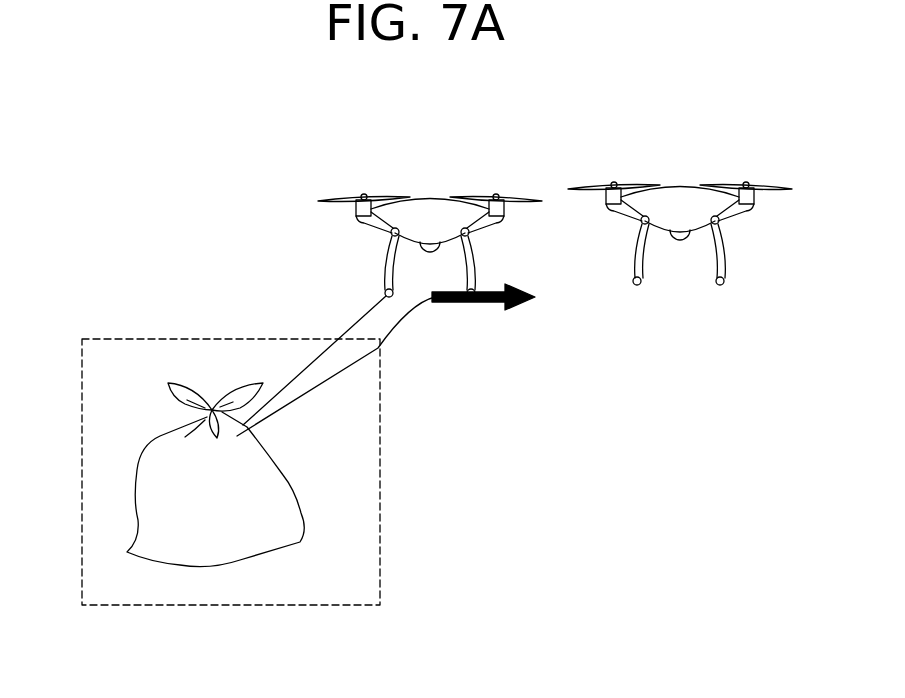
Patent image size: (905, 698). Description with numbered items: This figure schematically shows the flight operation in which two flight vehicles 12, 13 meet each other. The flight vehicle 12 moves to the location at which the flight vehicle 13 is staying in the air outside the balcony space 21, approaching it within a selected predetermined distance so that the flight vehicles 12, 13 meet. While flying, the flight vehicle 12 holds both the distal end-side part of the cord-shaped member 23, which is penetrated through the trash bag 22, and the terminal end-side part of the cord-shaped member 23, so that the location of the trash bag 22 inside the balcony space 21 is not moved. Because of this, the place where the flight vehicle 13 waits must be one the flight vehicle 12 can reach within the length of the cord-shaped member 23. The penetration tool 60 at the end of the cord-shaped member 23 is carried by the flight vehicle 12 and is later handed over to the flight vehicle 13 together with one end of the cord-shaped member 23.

The flight vehicle 12 is at (418, 177).
The flight vehicle 13 is at (693, 160).
The balcony space 21 is at (150, 338).
The trash bag 22 is at (270, 478).
The cord-shaped member 23 is at (362, 318).
The penetration tool 60 is at (490, 303).